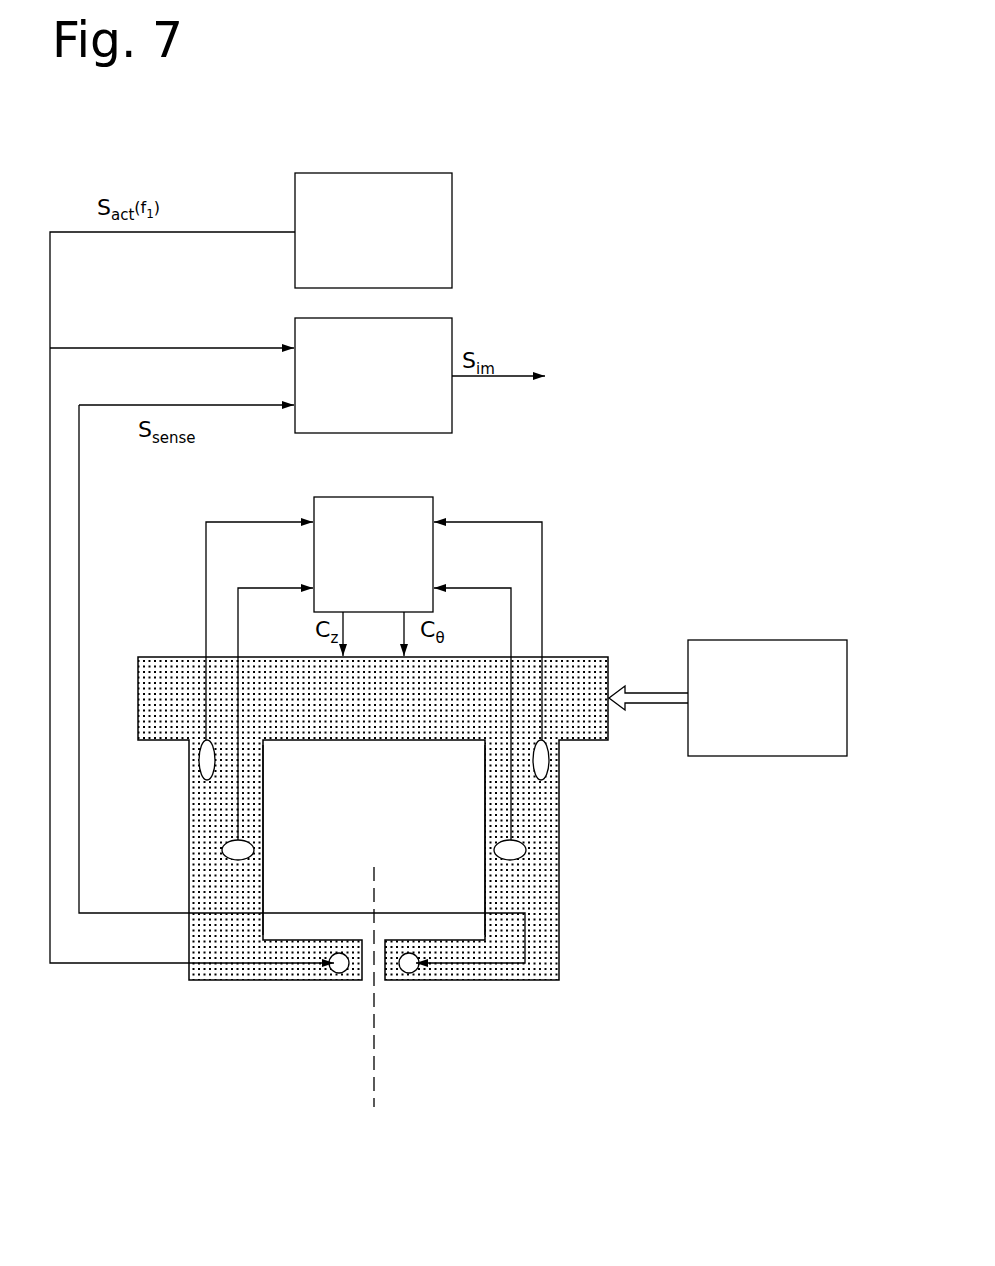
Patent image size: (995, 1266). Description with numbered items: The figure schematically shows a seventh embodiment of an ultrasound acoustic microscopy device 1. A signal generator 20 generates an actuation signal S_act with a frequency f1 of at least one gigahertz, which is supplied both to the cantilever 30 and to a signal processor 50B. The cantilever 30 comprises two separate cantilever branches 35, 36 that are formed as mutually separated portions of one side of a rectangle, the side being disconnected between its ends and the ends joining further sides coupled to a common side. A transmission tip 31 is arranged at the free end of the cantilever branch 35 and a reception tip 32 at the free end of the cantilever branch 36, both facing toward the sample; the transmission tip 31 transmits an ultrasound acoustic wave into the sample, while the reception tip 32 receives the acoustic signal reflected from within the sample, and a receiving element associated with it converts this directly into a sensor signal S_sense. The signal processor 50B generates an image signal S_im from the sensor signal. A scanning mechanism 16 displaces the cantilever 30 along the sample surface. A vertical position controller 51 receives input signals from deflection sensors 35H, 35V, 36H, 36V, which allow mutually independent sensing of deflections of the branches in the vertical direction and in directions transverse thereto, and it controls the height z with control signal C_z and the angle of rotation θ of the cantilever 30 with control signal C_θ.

The ultrasound acoustic microscopy device 1 is at (423, 848).
The scanning mechanism 16 is at (780, 743).
The signal generator 20 is at (389, 272).
The cantilever 30 is at (389, 698).
The transmission tip 31 is at (332, 970).
The reception tip 32 is at (419, 969).
The cantilever branch 35 is at (270, 934).
The cantilever branch 36 is at (478, 932).
The deflection sensor 35H is at (216, 764).
The deflection sensor 35V is at (252, 842).
The deflection sensor 36H is at (532, 766).
The deflection sensor 36V is at (495, 845).
The signal processor 50B is at (397, 418).
The vertical position controller 51 is at (420, 593).